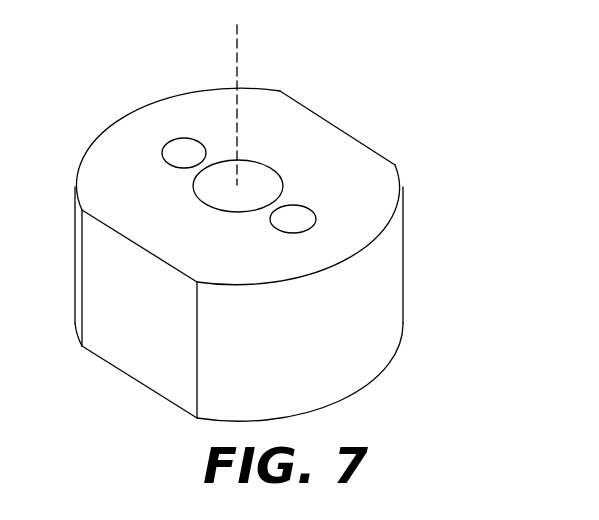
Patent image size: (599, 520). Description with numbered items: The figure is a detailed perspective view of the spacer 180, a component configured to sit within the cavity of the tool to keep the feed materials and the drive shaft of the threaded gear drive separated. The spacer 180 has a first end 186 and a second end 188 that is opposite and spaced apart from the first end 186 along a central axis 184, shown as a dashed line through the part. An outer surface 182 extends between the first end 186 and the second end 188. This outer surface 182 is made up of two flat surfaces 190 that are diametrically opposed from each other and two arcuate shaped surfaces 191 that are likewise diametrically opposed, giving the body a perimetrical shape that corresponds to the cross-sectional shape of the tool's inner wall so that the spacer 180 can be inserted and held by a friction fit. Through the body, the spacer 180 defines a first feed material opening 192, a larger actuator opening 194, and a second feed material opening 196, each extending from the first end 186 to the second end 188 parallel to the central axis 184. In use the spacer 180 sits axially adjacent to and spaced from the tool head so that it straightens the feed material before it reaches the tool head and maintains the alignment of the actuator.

The spacer 180 is at (458, 109).
The outer surface 182 is at (425, 274).
The central axis 184 is at (235, 63).
The first end 186 is at (152, 201).
The second end 188 is at (178, 406).
The flat surfaces 190 is at (318, 113).
The arcuate shaped surfaces 191 is at (93, 138).
The first feed material opening 192 is at (166, 139).
The actuator opening 194 is at (245, 158).
The second feed material opening 196 is at (304, 205).